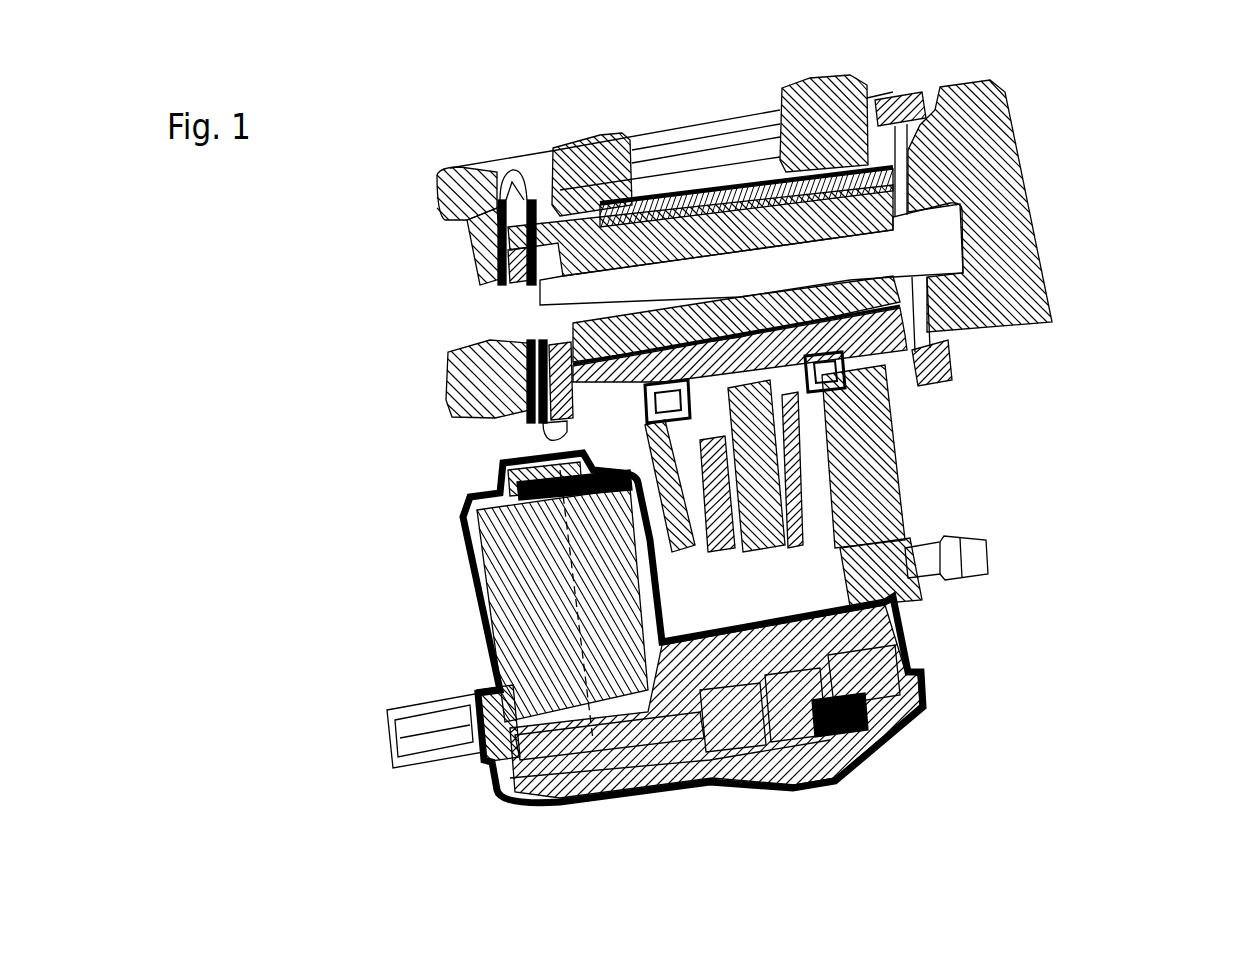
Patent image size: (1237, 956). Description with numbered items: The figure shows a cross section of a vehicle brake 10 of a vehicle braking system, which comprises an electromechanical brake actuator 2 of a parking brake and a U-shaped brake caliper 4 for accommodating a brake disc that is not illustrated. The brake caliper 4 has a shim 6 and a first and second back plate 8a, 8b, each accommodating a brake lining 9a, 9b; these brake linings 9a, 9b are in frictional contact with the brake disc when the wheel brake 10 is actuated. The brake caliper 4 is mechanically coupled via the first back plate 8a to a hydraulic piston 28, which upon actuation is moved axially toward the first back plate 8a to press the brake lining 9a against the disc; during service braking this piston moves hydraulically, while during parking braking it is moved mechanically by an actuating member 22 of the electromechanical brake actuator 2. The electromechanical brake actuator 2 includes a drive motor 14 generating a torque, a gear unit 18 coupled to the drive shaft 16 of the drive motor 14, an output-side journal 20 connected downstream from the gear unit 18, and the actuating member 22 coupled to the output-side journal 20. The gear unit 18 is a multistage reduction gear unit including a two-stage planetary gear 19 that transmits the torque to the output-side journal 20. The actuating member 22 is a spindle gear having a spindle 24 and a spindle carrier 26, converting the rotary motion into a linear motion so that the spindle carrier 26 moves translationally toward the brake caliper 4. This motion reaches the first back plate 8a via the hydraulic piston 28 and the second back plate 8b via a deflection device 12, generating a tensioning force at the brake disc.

The electromechanical brake actuator 2 is at (930, 744).
The brake caliper 4 is at (1045, 110).
The shim 6 is at (1000, 185).
The first back plate 8a is at (530, 433).
The second back plate 8b is at (450, 172).
The brake lining 9a is at (573, 323).
The brake lining 9b is at (526, 160).
The vehicle brake 10 is at (1233, 444).
The deflection device 12 is at (892, 98).
The drive motor 14 is at (482, 637).
The drive shaft 16 is at (552, 803).
The gear unit 18 is at (727, 793).
The two-stage planetary gear 19 is at (848, 768).
The output-side journal 20 is at (860, 630).
The actuating member 22 is at (822, 511).
The spindle 24 is at (827, 477).
The spindle carrier 26 is at (850, 400).
The hydraulic piston 28 is at (950, 345).